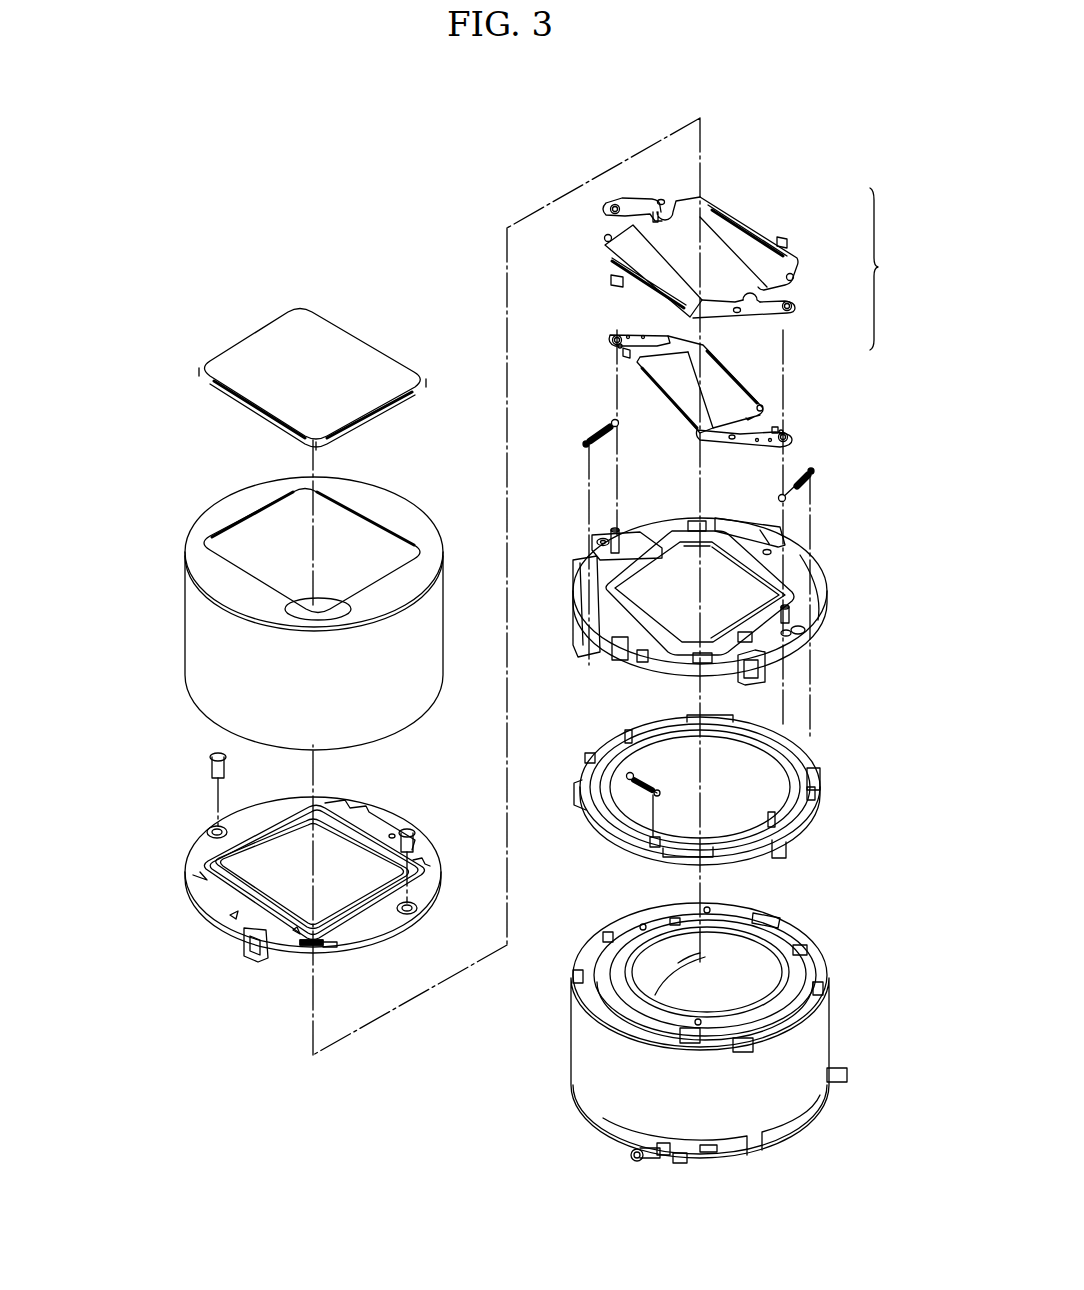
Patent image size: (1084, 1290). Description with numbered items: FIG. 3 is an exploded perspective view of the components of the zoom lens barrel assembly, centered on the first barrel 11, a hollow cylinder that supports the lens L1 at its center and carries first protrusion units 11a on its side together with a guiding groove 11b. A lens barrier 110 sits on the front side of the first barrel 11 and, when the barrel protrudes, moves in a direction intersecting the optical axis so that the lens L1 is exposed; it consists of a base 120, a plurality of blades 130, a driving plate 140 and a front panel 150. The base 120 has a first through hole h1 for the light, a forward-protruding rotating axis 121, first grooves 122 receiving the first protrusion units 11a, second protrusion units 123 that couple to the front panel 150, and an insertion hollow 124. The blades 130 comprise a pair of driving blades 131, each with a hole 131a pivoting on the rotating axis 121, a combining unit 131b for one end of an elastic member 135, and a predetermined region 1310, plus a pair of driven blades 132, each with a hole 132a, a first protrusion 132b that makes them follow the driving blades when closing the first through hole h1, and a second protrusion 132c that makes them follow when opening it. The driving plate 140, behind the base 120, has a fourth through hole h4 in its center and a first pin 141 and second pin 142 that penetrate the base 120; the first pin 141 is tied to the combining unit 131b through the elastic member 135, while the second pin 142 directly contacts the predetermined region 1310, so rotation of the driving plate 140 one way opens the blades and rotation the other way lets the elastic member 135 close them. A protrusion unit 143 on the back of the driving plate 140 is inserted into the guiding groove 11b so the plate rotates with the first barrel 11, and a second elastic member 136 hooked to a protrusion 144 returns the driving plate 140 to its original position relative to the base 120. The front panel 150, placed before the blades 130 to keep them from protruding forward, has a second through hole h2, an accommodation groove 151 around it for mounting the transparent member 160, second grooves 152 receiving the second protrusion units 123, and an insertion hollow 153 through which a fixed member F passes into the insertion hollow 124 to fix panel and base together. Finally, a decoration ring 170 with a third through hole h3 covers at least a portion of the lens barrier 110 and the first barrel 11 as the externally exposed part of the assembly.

The lens barrier 110 is at (760, 146).
The blades 130 is at (717, 303).
The driven blades 132 is at (699, 254).
The hole 132a is at (608, 208).
The first protrusion 132b is at (675, 210).
The second protrusion 132c is at (610, 281).
The driving blades 131 is at (704, 375).
The hole 131a is at (612, 335).
The combining unit 131b is at (621, 356).
The predetermined region 1310 is at (612, 345).
The elastic member 135 is at (588, 437).
The base 120 is at (721, 597).
The rotating axis 121 is at (617, 528).
The first grooves 122 is at (752, 688).
The second protrusion units 123 is at (641, 663).
The insertion hollow 124 is at (600, 540).
The first through hole h1 is at (745, 588).
The driving plate 140 is at (717, 797).
The first pin 141 is at (588, 756).
The second pin 142 is at (626, 740).
The protrusion unit 143 is at (787, 852).
The protrusion 144 is at (652, 850).
The second elastic member 136 is at (640, 787).
The fourth through hole h4 is at (756, 778).
The first barrel 11 is at (738, 1028).
The first protrusion units 11a is at (792, 1028).
The guiding groove 11b is at (800, 990).
The lens L1 is at (742, 946).
The transparent member 160 is at (334, 338).
The decoration ring 170 is at (266, 613).
The third through hole h3 is at (241, 542).
The front panel 150 is at (292, 870).
The accommodation groove 151 is at (335, 823).
The second grooves 152 is at (191, 911).
The insertion hollow 153 is at (212, 826).
The second through hole h2 is at (251, 864).
The fixed member F is at (210, 758).